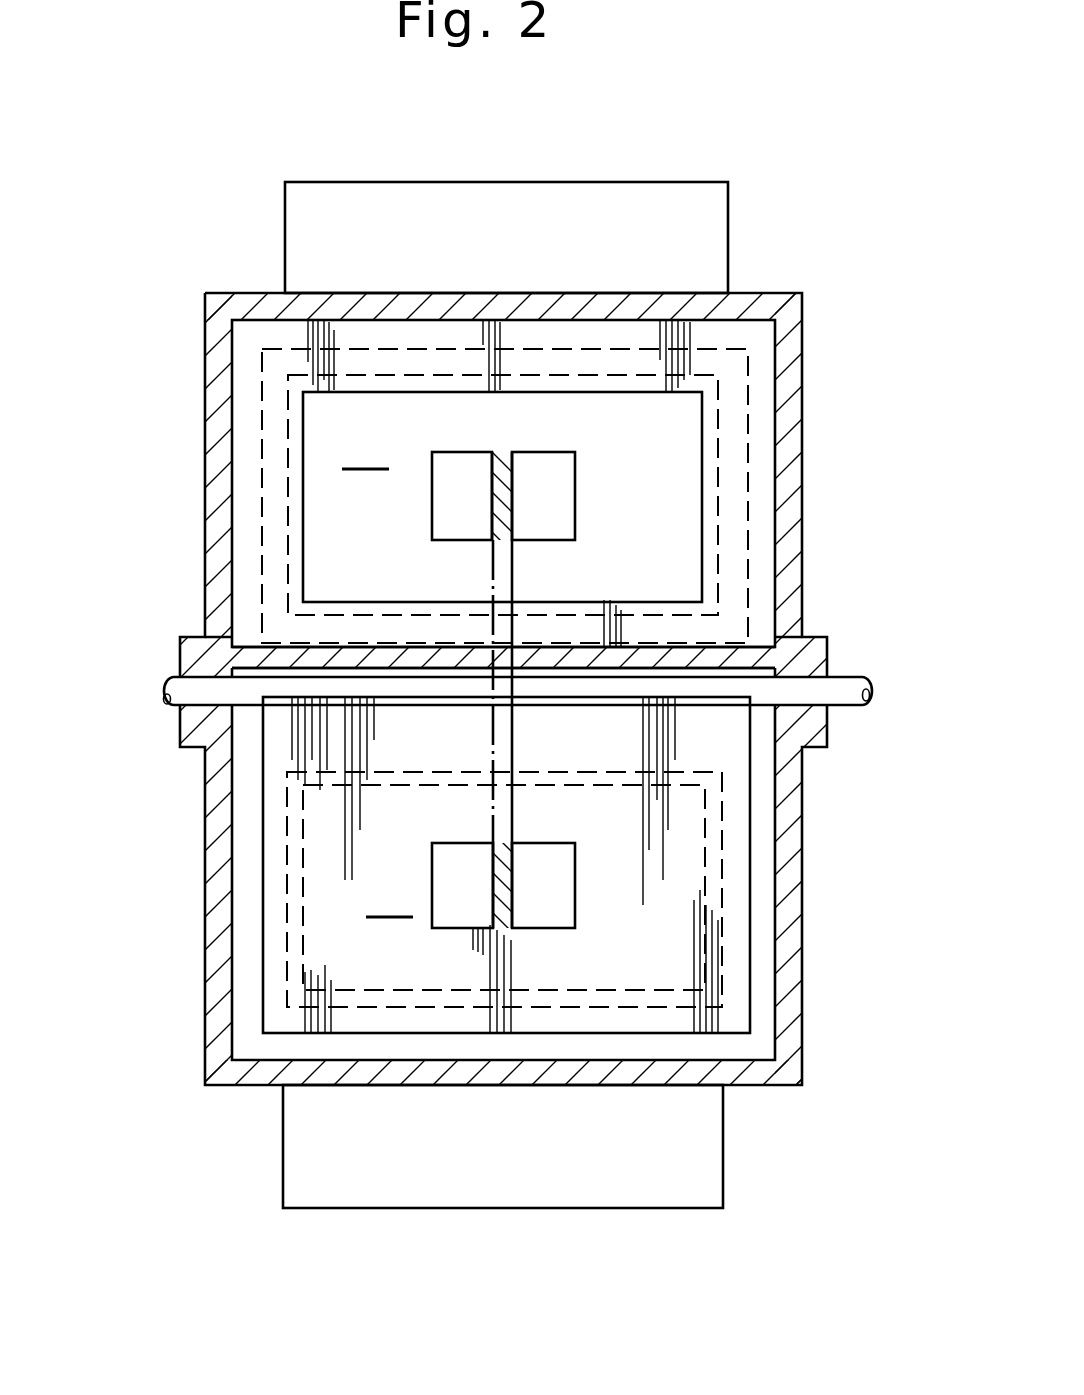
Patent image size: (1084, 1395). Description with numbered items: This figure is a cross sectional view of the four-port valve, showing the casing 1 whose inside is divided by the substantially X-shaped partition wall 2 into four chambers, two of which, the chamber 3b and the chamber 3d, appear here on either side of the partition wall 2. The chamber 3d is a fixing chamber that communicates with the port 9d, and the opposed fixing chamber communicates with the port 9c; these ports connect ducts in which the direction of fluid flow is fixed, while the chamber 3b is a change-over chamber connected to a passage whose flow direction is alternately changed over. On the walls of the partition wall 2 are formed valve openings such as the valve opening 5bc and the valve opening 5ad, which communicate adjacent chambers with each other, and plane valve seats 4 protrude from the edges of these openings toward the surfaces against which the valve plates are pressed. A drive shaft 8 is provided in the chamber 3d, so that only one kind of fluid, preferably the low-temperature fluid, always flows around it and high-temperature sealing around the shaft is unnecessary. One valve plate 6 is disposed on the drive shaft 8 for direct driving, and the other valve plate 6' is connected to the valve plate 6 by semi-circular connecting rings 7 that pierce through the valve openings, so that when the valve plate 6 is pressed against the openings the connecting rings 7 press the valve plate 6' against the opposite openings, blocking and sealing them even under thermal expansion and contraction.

The casing 1 is at (213, 920).
The partition wall 2 is at (252, 725).
The chamber 3b is at (502, 497).
The chamber 3d is at (506, 865).
The plane valve seat 4 is at (733, 392).
The valve opening 5bc is at (702, 460).
The valve opening 5ad is at (707, 832).
The valve plate 6 is at (485, 926).
The valve plate 6' is at (545, 405).
The semi-circular connecting ring 7 is at (507, 488).
The drive shaft 8 is at (752, 684).
The port 9c is at (632, 197).
The port 9d is at (577, 1185).